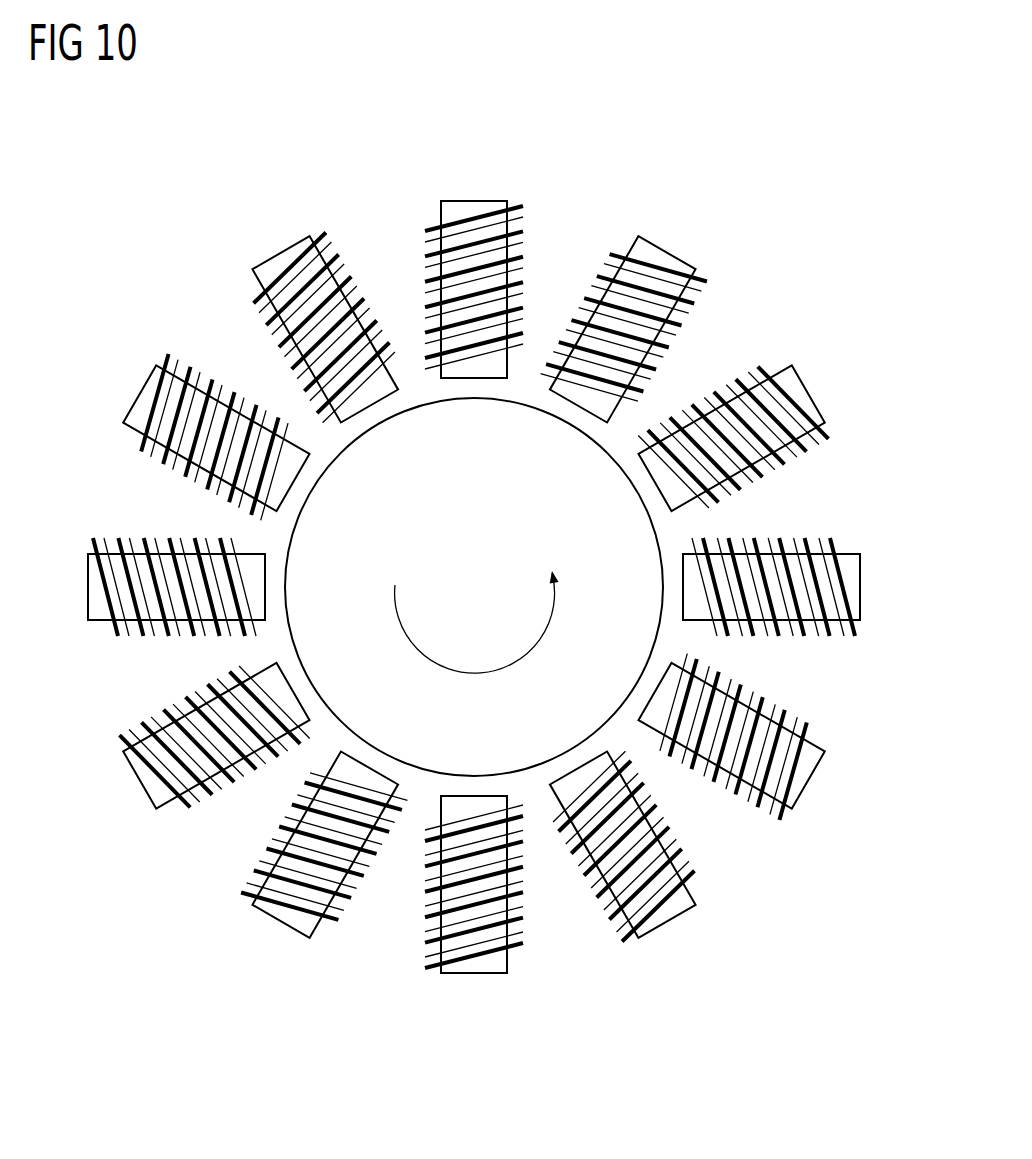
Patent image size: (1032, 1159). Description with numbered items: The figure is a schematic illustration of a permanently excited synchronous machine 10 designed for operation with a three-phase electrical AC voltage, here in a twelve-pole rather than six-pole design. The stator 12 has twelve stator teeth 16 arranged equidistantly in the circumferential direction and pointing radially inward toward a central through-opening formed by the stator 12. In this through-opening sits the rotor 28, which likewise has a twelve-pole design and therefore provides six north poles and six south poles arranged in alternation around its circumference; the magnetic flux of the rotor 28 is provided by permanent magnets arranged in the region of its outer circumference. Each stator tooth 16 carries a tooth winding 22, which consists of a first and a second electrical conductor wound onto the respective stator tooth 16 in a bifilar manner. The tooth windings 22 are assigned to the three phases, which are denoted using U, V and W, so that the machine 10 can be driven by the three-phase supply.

The synchronous machine 10 is at (480, 575).
The stator 12 is at (480, 604).
The stator tooth 16 is at (441, 206).
The tooth winding 22 is at (515, 197).
The rotor 28 is at (489, 602).